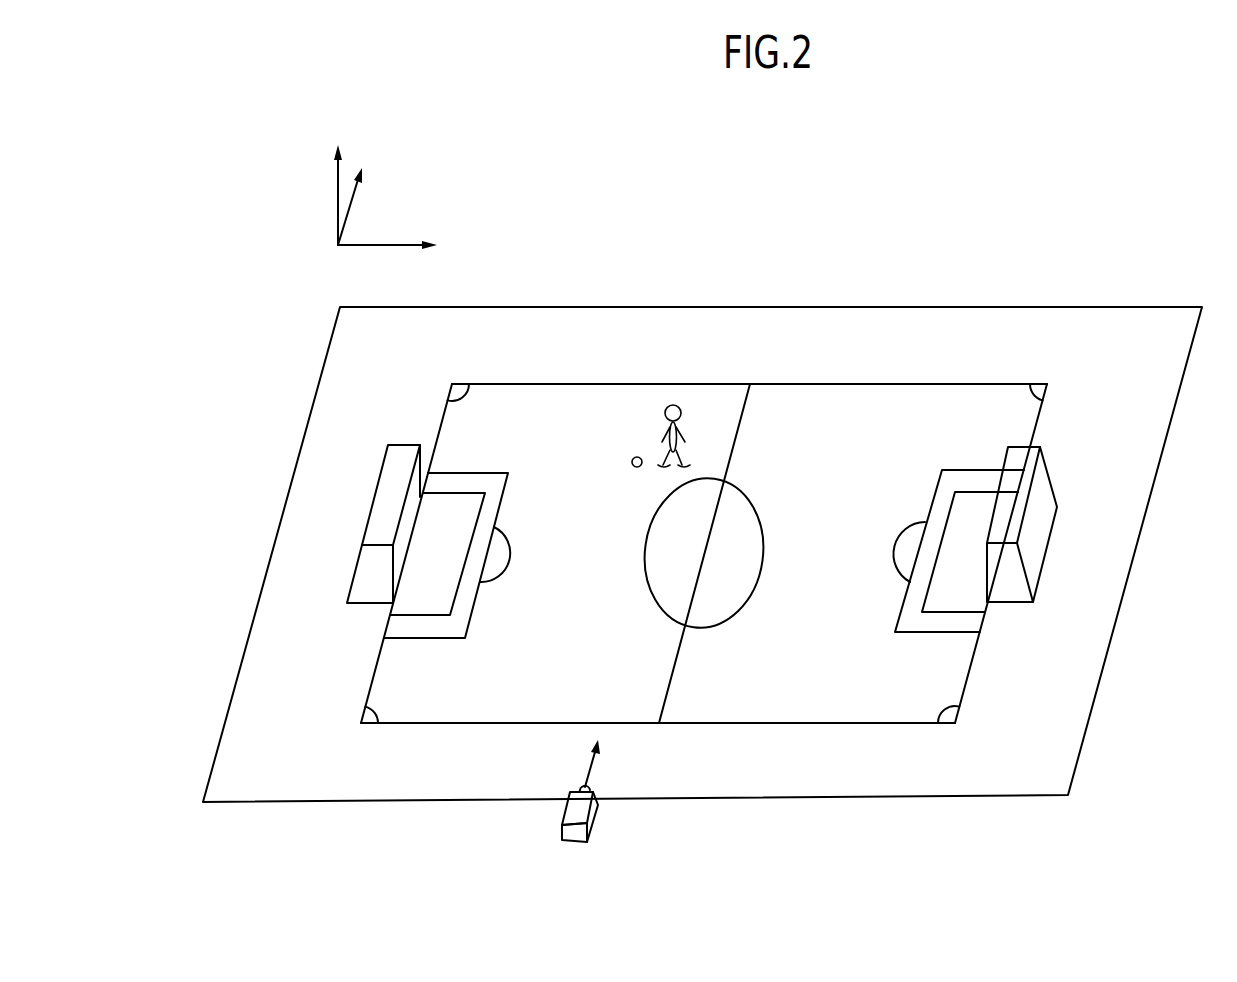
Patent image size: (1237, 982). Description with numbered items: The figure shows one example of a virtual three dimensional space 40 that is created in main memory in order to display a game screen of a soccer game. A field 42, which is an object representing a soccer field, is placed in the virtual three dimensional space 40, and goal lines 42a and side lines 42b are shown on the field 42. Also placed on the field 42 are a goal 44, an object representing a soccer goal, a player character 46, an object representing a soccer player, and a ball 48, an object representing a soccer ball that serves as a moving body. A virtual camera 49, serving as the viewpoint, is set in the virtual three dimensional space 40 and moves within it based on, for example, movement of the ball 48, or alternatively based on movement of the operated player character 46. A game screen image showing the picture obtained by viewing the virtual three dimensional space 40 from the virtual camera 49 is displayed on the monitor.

The virtual three dimensional space 40 is at (663, 202).
The field 42 is at (909, 320).
The goal lines 42a is at (370, 677).
The side lines 42b is at (952, 382).
The goal 44 is at (350, 578).
The player character 46 is at (673, 405).
The ball 48 is at (632, 462).
The virtual camera 49 is at (595, 812).